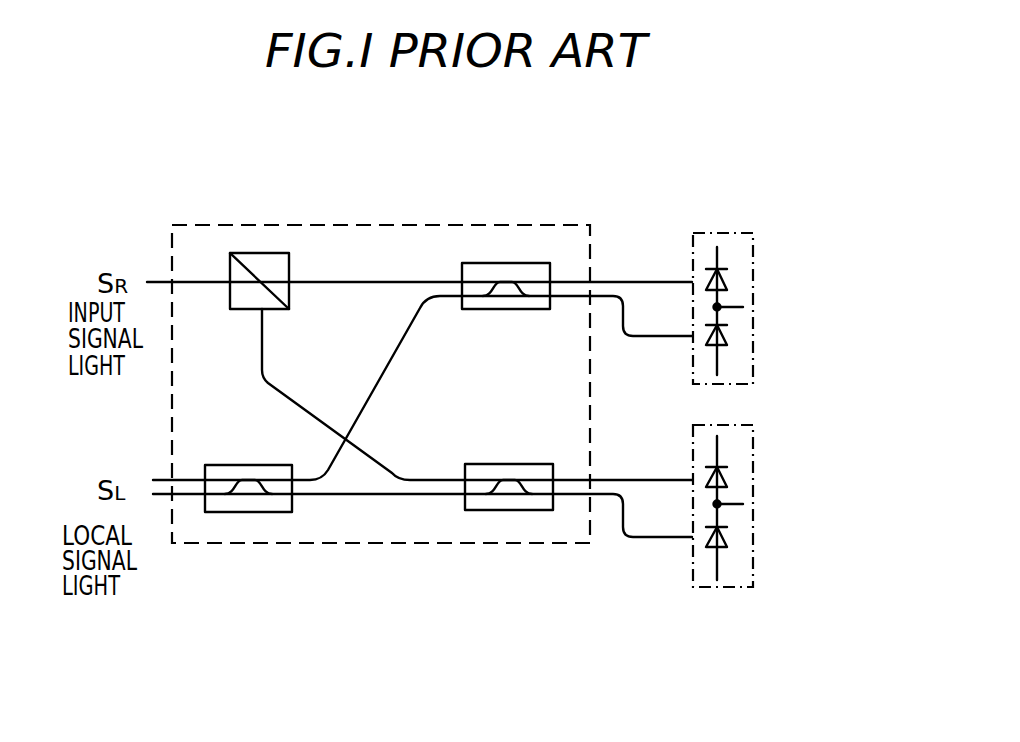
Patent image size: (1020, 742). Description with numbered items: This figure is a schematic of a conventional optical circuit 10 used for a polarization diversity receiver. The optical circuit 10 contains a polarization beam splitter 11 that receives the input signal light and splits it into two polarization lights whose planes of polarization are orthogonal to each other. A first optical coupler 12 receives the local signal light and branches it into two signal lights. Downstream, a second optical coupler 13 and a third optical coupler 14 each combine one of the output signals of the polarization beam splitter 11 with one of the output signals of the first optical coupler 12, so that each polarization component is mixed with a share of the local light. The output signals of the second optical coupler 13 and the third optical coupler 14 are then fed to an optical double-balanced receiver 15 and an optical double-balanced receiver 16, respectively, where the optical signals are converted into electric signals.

The optical circuit 10 is at (190, 216).
The polarization beam splitter 11 is at (274, 251).
The first optical coupler 12 is at (265, 513).
The second optical coupler 13 is at (512, 262).
The third optical coupler 14 is at (520, 511).
The optical double-balanced receiver 15 is at (730, 233).
The optical double-balanced receiver 16 is at (745, 587).